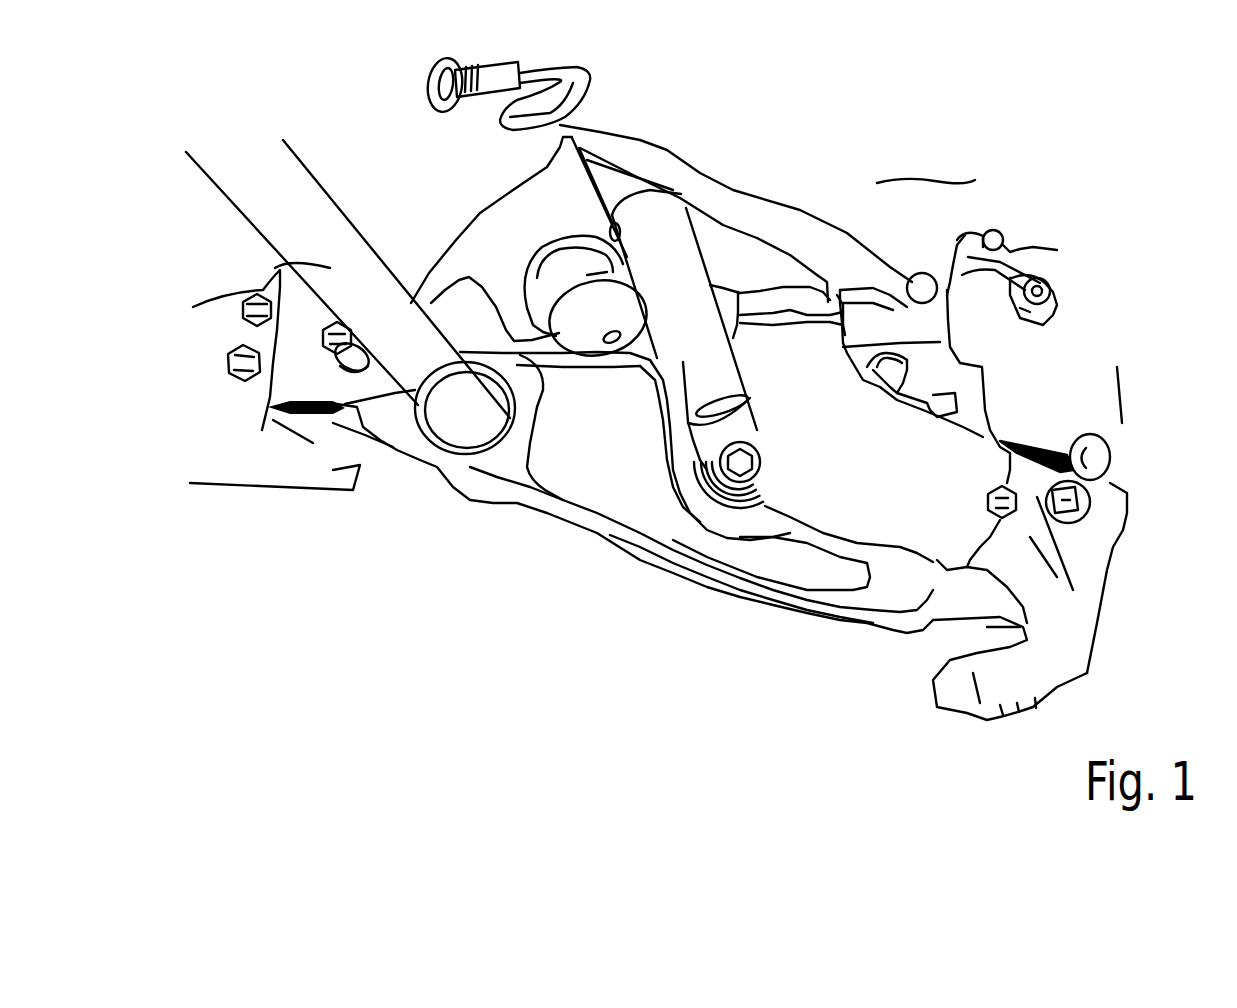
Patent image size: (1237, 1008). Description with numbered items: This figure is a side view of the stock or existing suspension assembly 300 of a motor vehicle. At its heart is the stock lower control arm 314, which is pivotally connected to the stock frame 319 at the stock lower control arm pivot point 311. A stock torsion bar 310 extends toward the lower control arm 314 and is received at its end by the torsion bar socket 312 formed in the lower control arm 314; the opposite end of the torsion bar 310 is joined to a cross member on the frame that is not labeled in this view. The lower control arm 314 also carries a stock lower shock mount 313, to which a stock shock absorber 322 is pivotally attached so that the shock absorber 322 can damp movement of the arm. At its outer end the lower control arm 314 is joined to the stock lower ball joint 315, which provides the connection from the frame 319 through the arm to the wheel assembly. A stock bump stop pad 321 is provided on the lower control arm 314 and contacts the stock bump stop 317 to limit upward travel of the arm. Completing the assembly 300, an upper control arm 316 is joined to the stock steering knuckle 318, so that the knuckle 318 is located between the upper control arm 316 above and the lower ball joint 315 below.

The suspension assembly 300 is at (926, 155).
The torsion bar 310 is at (425, 362).
The lower control arm pivot point 311 is at (323, 343).
The torsion bar socket 312 is at (510, 418).
The lower shock mount 313 is at (738, 460).
The lower control arm 314 is at (708, 547).
The lower ball joint 315 is at (973, 637).
The upper control arm 316 is at (816, 237).
The bump stop 317 is at (588, 310).
The steering knuckle 318 is at (920, 328).
The frame 319 is at (302, 465).
The bump stop pad 321 is at (617, 363).
The shock absorber 322 is at (692, 305).